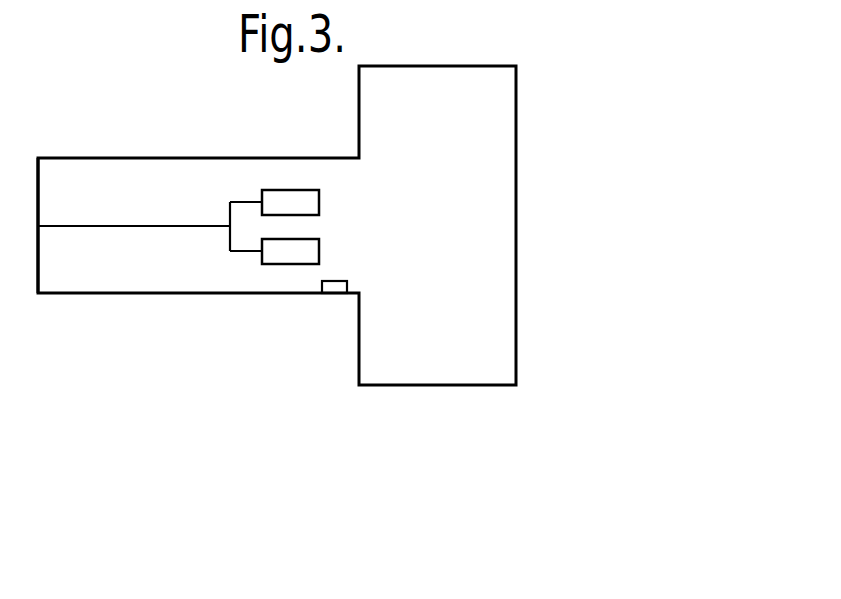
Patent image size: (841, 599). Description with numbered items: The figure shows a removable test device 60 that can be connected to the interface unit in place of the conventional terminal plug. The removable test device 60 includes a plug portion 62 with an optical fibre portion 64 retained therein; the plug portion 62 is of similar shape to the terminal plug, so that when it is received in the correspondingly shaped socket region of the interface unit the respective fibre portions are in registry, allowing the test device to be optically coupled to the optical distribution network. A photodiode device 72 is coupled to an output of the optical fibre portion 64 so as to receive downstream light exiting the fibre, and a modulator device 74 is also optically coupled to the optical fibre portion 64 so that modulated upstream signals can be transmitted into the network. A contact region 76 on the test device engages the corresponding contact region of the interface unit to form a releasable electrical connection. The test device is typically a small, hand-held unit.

The removable test device 60 is at (203, 367).
The plug portion 62 is at (67, 294).
The optical fibre portion 64 is at (135, 227).
The photodiode device 72 is at (280, 198).
The modulator device 74 is at (287, 252).
The contact region 76 is at (336, 281).